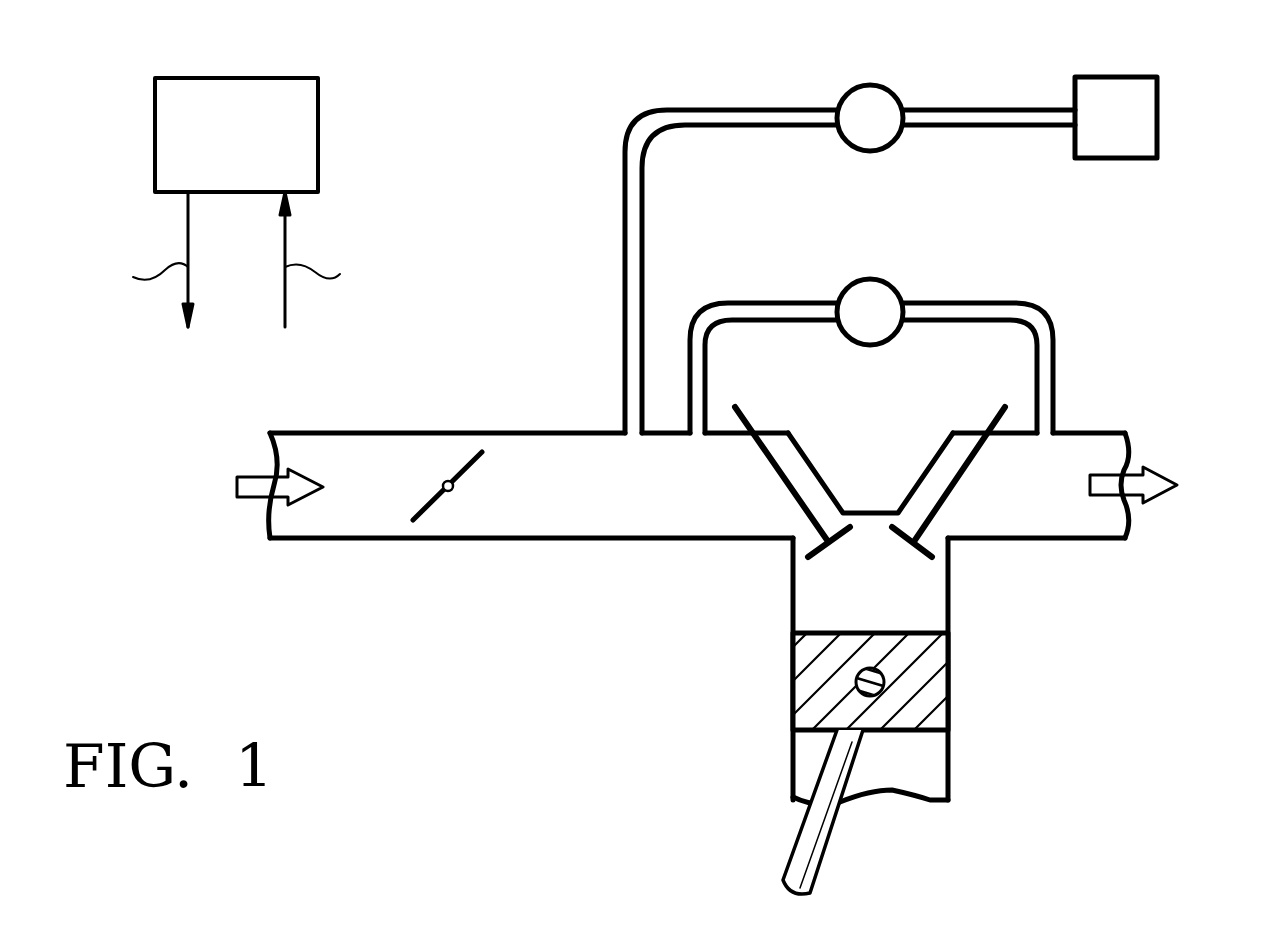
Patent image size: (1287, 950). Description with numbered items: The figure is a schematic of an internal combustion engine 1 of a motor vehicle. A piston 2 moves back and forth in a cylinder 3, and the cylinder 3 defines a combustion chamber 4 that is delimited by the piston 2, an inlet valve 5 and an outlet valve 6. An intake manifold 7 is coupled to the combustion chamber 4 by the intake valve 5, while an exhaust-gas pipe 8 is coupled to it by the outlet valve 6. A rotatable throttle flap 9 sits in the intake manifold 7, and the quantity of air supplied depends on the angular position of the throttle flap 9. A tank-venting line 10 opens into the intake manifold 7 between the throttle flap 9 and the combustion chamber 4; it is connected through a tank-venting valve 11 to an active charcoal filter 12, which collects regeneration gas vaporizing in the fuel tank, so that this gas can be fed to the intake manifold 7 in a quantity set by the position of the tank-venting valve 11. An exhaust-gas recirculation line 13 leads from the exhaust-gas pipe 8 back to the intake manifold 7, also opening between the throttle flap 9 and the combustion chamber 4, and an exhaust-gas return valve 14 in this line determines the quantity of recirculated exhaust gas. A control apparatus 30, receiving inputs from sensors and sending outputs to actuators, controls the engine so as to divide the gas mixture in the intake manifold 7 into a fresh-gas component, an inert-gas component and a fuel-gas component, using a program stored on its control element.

The internal combustion engine 1 is at (1167, 362).
The piston 2 is at (930, 688).
The cylinder 3 is at (950, 597).
The combustion chamber 4 is at (805, 598).
The inlet valve 5 is at (788, 478).
The outlet valve 6 is at (950, 485).
The intake manifold 7 is at (594, 522).
The exhaust-gas pipe 8 is at (1035, 523).
The throttle flap 9 is at (432, 504).
The tank-venting line 10 is at (630, 268).
The tank-venting valve 11 is at (870, 88).
The active charcoal filter 12 is at (1113, 80).
The exhaust-gas recirculation line 13 is at (750, 305).
The exhaust-gas return valve 14 is at (870, 288).
The control apparatus 30 is at (318, 92).